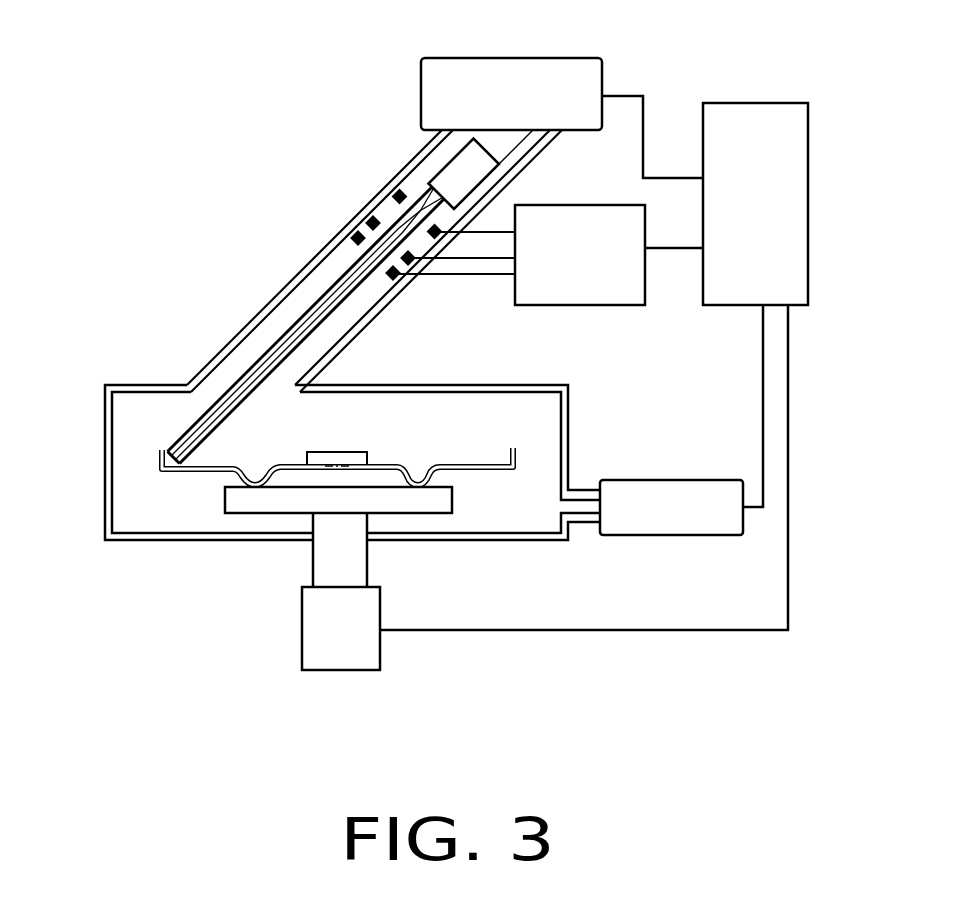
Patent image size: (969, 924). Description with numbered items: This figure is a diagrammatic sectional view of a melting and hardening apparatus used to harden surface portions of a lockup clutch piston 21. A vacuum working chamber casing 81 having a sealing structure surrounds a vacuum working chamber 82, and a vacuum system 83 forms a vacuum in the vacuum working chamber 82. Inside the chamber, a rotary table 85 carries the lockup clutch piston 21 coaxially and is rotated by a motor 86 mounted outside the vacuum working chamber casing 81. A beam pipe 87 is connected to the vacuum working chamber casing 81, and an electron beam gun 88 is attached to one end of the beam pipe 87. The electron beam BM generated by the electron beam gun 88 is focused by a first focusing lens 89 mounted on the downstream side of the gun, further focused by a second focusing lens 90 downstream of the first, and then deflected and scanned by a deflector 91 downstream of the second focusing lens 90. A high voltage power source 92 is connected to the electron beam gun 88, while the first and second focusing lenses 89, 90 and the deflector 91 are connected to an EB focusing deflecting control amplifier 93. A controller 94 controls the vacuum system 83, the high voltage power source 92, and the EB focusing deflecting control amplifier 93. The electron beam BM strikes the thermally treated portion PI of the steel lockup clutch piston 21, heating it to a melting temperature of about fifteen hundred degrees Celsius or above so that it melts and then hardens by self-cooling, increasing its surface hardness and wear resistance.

The lockup clutch piston 21 is at (494, 478).
The vacuum working chamber casing 81 is at (143, 384).
The vacuum working chamber 82 is at (495, 429).
The vacuum system 83 is at (666, 480).
The rotary table 85 is at (250, 508).
The motor 86 is at (307, 655).
The beam pipe 87 is at (265, 306).
The electron beam gun 88 is at (428, 150).
The first focusing lens 89 is at (390, 187).
The second focusing lens 90 is at (362, 217).
The deflector 91 is at (342, 233).
The high voltage power source 92 is at (555, 57).
The EB focusing deflecting control amplifier 93 is at (583, 205).
The controller 94 is at (794, 102).
The electron beam BM is at (338, 316).
The thermally treated portion PI is at (162, 435).